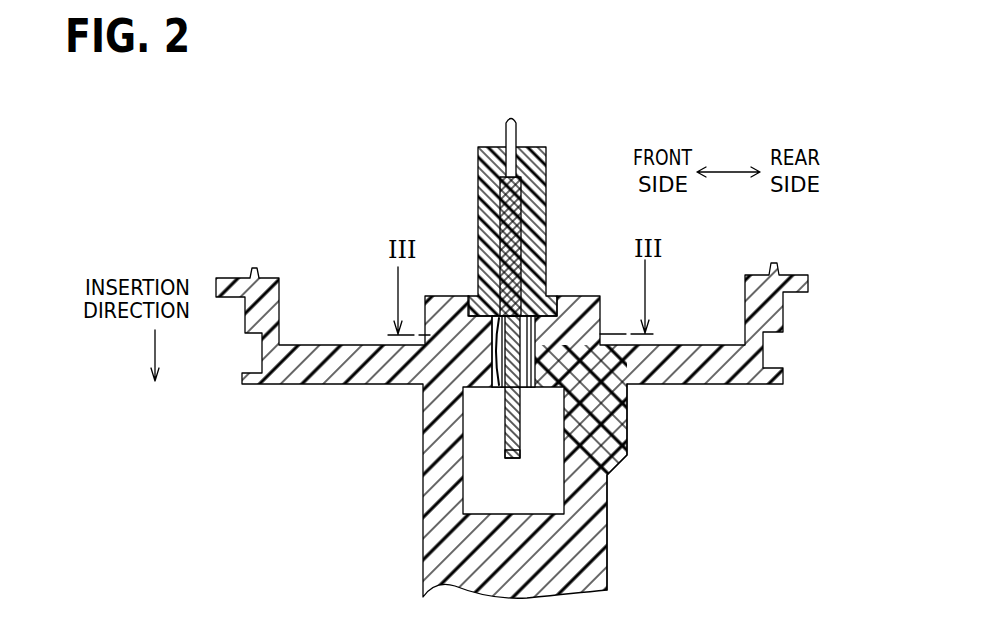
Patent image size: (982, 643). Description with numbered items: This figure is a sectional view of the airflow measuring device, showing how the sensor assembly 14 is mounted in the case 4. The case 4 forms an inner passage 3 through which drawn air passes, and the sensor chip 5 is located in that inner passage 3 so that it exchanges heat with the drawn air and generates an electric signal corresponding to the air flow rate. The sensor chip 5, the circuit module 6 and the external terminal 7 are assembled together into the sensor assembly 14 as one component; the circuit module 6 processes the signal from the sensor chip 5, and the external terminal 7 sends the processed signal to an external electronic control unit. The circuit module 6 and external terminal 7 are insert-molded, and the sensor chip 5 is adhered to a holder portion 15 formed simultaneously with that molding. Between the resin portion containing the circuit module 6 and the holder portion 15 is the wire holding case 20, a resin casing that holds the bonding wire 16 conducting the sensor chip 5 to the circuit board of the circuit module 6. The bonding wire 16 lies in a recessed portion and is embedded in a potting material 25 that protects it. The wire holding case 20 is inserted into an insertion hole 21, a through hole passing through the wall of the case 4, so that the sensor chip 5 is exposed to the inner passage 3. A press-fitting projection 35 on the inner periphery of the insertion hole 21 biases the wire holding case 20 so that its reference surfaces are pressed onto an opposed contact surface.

The inner passage 3 is at (553, 487).
The case 4 is at (604, 477).
The sensor chip 5 is at (506, 426).
The circuit module 6 is at (508, 213).
The external terminal 7 is at (510, 118).
The sensor assembly 14 is at (549, 147).
The holder portion 15 is at (508, 457).
The bonding wire 16 is at (490, 350).
The wire holding case 20 is at (545, 350).
The insertion hole 21 is at (548, 380).
The potting material 25 is at (494, 383).
The press-fitting projection 35 is at (550, 342).